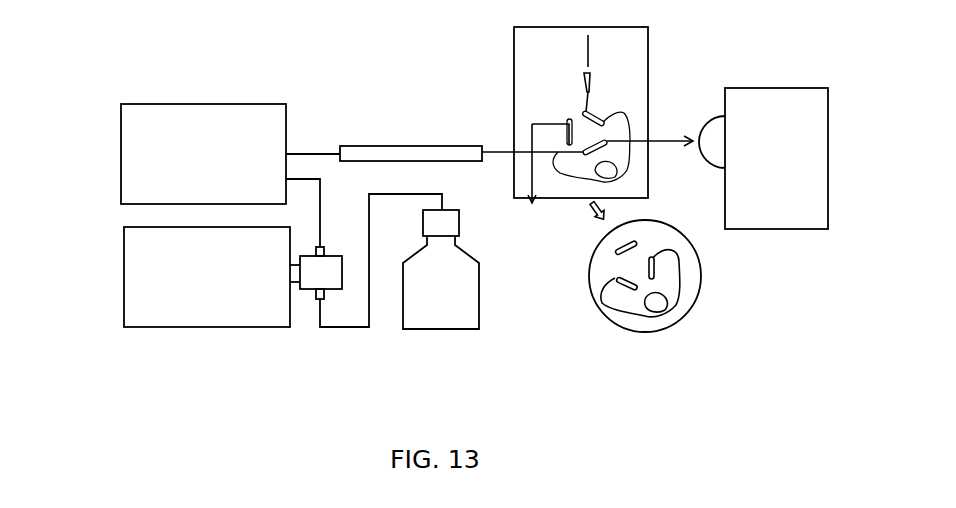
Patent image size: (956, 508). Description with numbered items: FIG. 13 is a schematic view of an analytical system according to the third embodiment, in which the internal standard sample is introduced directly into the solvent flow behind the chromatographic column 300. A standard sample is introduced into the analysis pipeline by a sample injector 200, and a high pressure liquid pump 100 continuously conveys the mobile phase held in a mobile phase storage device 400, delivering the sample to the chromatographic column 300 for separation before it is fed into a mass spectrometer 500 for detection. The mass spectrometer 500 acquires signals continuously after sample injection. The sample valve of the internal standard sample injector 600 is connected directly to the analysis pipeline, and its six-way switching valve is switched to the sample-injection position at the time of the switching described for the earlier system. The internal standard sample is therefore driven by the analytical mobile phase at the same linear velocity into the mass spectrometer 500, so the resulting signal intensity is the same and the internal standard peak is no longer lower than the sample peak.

The high pressure liquid pump 100 is at (141, 293).
The sample injector 200 is at (141, 142).
The chromatographic column 300 is at (410, 150).
The mobile phase storage device 400 is at (429, 299).
The mass spectrometer 500 is at (758, 118).
The internal standard sample injector 600 is at (524, 92).